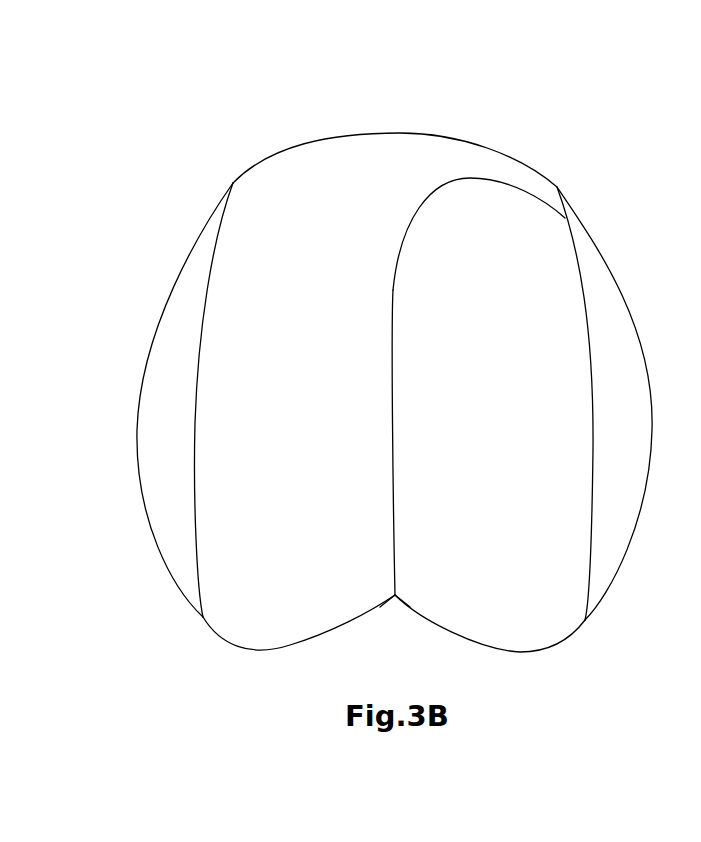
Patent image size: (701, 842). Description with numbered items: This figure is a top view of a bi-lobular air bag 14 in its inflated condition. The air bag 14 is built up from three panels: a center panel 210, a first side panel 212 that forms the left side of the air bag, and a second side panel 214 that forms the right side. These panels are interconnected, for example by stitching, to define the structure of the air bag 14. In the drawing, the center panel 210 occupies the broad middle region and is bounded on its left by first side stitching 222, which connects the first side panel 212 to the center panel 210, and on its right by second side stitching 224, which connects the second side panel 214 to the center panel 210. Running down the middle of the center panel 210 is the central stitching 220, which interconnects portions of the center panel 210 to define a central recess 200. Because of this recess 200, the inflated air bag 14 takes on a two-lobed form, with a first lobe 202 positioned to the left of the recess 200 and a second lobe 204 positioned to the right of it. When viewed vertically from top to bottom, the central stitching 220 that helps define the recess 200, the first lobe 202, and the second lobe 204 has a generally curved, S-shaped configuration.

The air bag 14 is at (358, 110).
The central recess 200 is at (396, 614).
The first lobe 202 is at (272, 593).
The second lobe 204 is at (542, 607).
The center panel 210 is at (460, 240).
The first side panel 212 is at (182, 315).
The second side panel 214 is at (595, 280).
The central stitching 220 is at (392, 348).
The first side stitching 222 is at (195, 423).
The second side stitching 224 is at (590, 383).